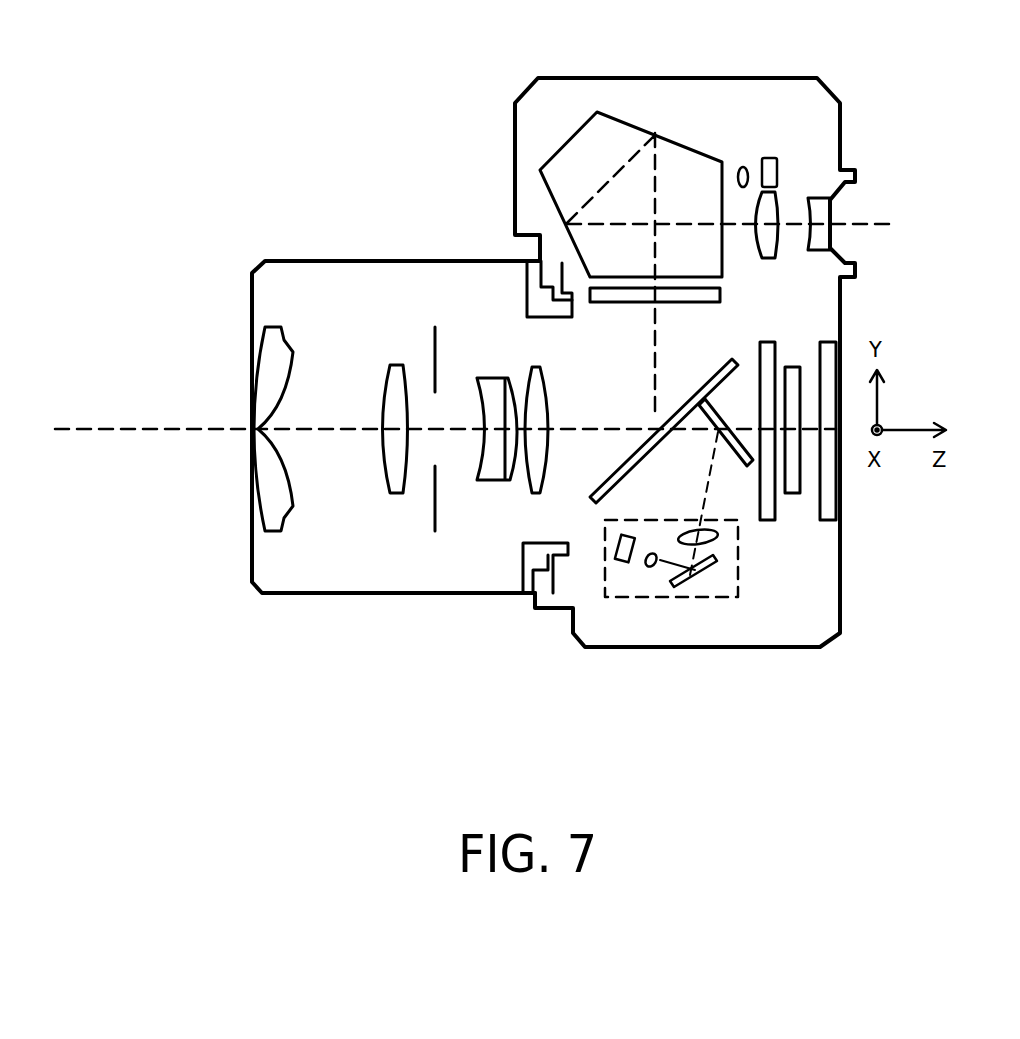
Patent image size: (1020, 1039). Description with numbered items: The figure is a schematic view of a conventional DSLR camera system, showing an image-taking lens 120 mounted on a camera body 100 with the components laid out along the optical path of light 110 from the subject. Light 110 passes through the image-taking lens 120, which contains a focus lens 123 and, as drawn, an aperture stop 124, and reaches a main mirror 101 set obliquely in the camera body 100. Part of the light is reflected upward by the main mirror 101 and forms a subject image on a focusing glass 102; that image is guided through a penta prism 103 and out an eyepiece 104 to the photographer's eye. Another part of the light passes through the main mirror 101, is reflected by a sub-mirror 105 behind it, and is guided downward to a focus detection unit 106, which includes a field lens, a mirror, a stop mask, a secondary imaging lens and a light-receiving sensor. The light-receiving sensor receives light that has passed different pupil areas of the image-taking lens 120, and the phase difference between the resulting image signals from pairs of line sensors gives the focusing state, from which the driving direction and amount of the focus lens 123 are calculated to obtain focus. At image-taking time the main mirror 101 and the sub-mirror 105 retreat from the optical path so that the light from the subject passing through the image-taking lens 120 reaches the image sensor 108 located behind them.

The camera body 100 is at (590, 78).
The image-taking lens 120 is at (288, 262).
The light 110 is at (128, 429).
The focus lens 123 is at (377, 457).
The aperture stop 124 is at (433, 515).
The penta prism 103 is at (690, 165).
The eyepiece 104 is at (827, 263).
The focusing glass 102 is at (680, 303).
The main mirror 101 is at (588, 492).
The sub-mirror 105 is at (737, 453).
The image sensor 108 is at (797, 493).
The focus detection unit 106 is at (720, 597).